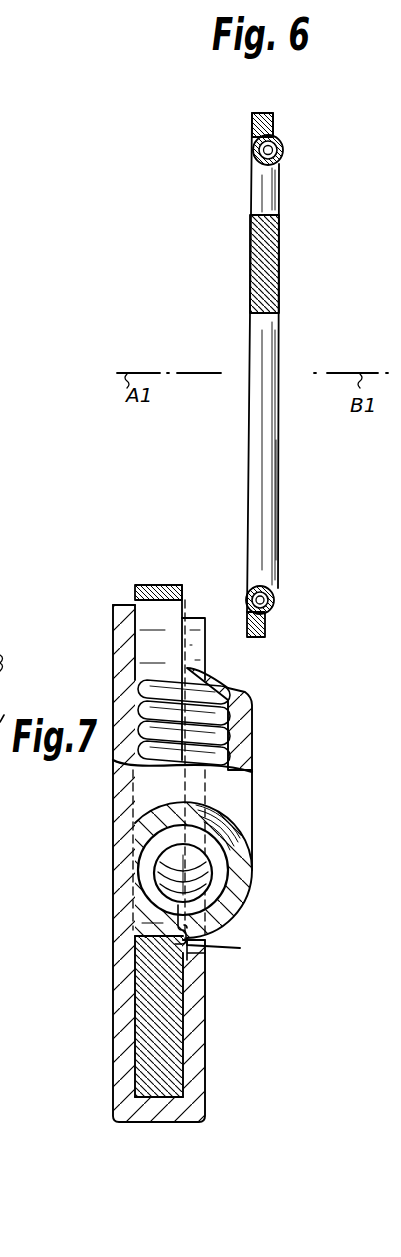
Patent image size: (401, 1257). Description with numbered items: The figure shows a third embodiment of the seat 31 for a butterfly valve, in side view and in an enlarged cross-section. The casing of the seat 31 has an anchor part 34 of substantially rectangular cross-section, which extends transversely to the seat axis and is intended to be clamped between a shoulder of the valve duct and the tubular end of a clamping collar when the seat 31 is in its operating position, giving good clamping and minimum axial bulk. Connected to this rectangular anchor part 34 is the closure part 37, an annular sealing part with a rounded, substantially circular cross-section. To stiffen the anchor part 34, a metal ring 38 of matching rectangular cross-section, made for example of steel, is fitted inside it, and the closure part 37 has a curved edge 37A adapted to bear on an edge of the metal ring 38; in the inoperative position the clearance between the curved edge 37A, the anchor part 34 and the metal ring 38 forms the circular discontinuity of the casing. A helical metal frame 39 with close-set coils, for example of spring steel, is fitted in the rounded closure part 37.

In FIG. 6, the seat 31 is at (296, 143).
In FIG. 7, the seat 31 is at (106, 853).
In FIG. 6, the anchor part 34 is at (266, 626).
In FIG. 7, the anchor part 34 is at (108, 1024).
In FIG. 6, the closure part 37 is at (268, 590).
In FIG. 7, the closure part 37 is at (257, 882).
In FIG. 7, the curved edge 37A is at (240, 948).
In FIG. 7, the metal ring 38 is at (142, 936).
In FIG. 6, the helical metal frame 39 is at (256, 150).
In FIG. 7, the helical metal frame 39 is at (172, 842).